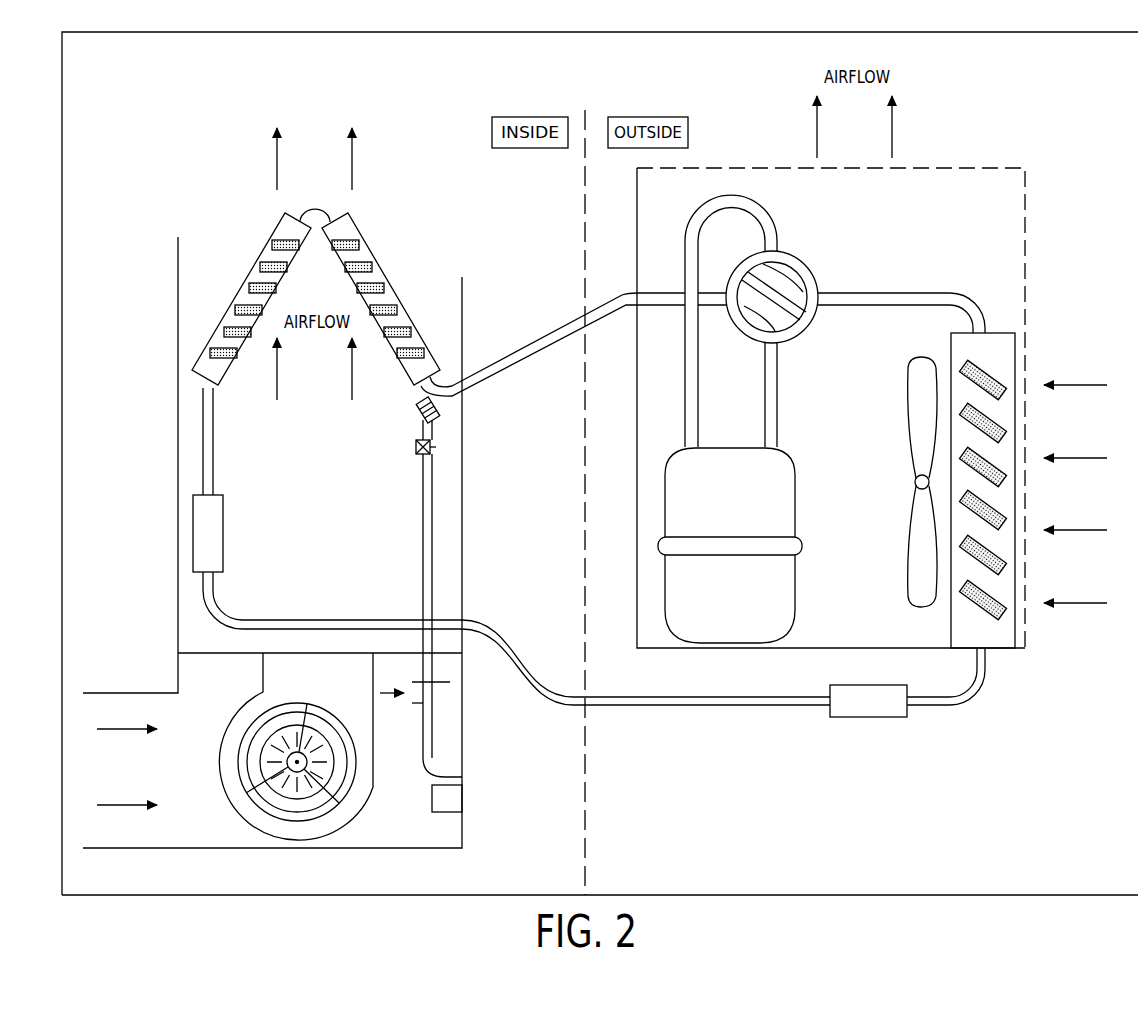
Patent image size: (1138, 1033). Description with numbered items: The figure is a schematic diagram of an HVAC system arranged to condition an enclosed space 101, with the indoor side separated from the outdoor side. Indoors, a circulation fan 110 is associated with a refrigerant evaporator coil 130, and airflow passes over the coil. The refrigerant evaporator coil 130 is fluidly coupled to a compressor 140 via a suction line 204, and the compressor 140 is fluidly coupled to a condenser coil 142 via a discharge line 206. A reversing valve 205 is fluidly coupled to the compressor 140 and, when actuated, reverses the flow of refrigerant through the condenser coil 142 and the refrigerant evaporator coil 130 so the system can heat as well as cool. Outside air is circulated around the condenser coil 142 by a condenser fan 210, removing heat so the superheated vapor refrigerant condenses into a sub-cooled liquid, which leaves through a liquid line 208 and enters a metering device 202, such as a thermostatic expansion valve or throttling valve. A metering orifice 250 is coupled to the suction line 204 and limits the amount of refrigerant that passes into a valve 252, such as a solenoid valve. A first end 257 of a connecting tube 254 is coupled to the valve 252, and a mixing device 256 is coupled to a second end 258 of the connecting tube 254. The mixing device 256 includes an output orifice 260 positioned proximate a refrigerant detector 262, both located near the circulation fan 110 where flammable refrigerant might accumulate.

The enclosed space 101 is at (446, 186).
The circulation fan 110 is at (219, 770).
The refrigerant evaporator coil 130 is at (382, 272).
The compressor 140 is at (795, 508).
The condenser coil 142 is at (1007, 632).
The metering device 202 is at (850, 718).
The suction line 204 is at (592, 321).
The reversing valve 205 is at (782, 342).
The discharge line 206 is at (868, 306).
The liquid line 208 is at (990, 683).
The condenser fan 210 is at (915, 482).
The metering orifice 250 is at (421, 406).
The valve 252 is at (414, 449).
The connecting tube 254 is at (433, 607).
The mixing device 256 is at (422, 725).
The first end 257 is at (435, 460).
The second end 258 is at (443, 682).
The output orifice 260 is at (462, 777).
The refrigerant detector 262 is at (448, 812).